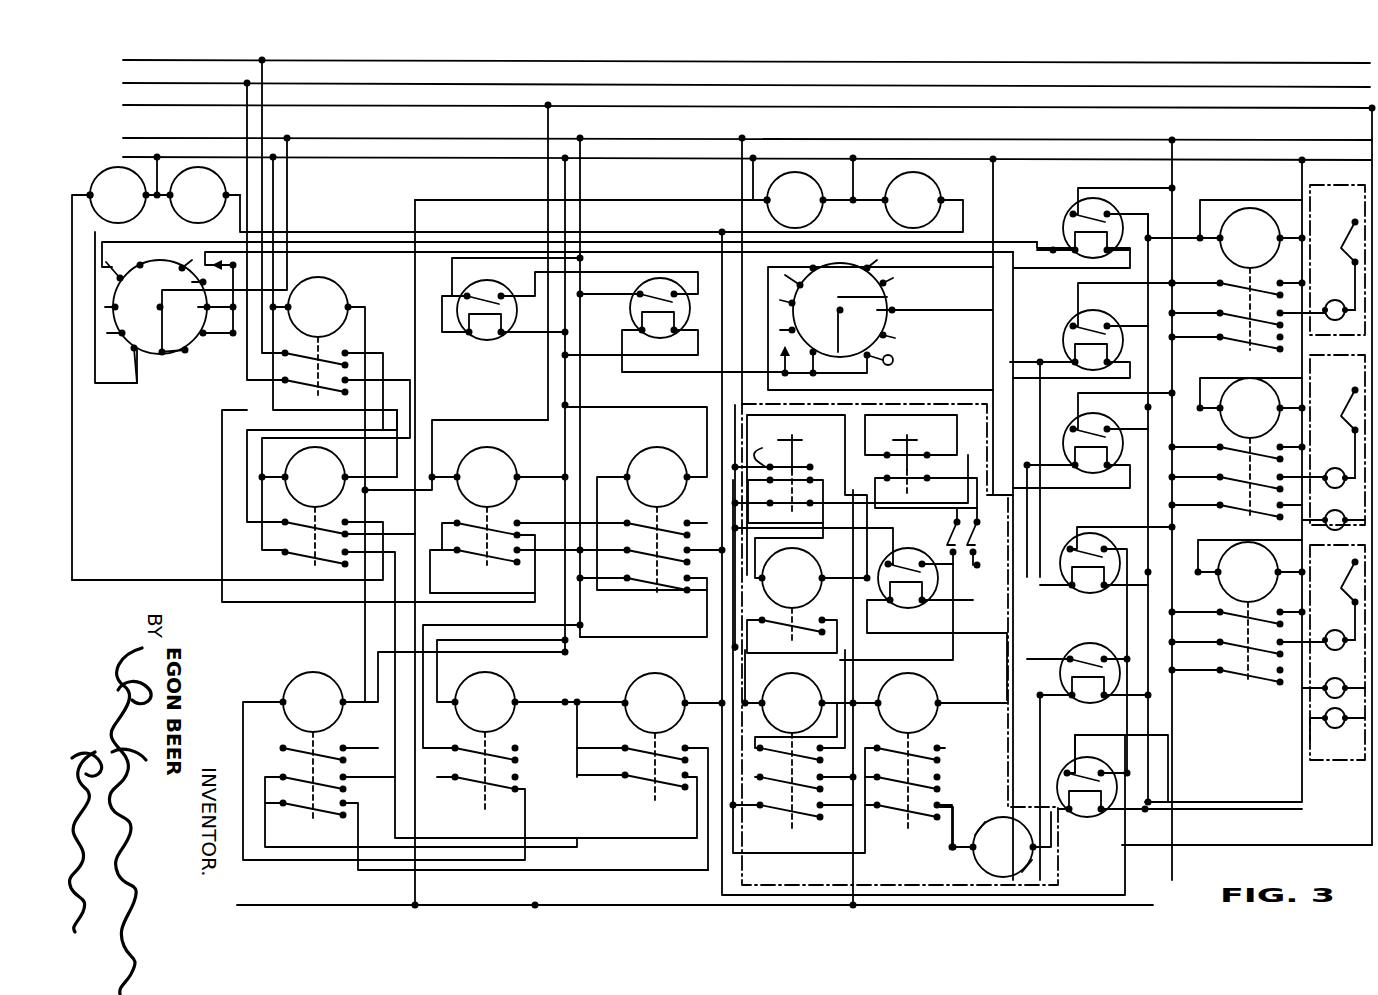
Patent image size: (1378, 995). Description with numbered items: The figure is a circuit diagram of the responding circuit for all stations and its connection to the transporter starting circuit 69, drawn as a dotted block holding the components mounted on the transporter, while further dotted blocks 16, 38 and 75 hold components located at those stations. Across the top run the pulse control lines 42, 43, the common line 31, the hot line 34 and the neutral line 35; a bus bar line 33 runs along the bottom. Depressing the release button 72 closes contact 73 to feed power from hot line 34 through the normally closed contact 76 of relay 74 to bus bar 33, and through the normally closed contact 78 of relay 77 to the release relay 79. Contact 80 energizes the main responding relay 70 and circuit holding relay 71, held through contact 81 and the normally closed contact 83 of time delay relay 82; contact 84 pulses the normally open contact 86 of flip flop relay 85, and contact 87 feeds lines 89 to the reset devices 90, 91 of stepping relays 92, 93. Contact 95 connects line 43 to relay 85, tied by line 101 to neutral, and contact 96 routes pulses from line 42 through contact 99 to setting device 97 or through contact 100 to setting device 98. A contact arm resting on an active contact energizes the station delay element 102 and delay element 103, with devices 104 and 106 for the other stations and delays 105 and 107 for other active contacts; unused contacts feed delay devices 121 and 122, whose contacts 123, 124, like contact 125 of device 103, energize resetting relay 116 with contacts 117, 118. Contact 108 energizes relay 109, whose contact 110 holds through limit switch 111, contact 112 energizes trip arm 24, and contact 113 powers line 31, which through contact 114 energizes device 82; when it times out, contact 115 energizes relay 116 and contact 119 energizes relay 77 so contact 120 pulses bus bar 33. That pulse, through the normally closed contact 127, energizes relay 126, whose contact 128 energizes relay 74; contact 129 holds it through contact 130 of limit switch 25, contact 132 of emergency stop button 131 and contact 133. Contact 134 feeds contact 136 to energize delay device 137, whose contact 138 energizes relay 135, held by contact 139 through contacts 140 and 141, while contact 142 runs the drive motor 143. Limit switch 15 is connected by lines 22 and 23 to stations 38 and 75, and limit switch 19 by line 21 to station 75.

The pulse control line 42 is at (168, 60).
The pulse control line 43 is at (126, 82).
The common line 31 is at (124, 105).
The hot line 34 is at (126, 138).
The neutral line 35 is at (124, 157).
The bus bar line 33 is at (282, 905).
The setting or actuating device 97 is at (227, 373).
The reset device 90 is at (193, 190).
The setting or actuating device 98 is at (825, 200).
The reset device 91 is at (913, 200).
The lines 89 is at (714, 232).
The stepping relay 92 is at (170, 352).
The stepping relay 93 is at (890, 322).
The main responding relay 70 is at (340, 295).
The contact 96 is at (310, 356).
The contact 95 is at (308, 394).
The line 101 is at (300, 410).
The flip flop relay 85 is at (328, 506).
The contact 100 is at (318, 537).
The contact 99 is at (345, 522).
The normally open contact 86 is at (312, 562).
The thermal time delay device 121 is at (487, 340).
The normally open contact 123 is at (501, 296).
The thermal time delay device 122 is at (632, 315).
The normally open contact 124 is at (680, 280).
The circuit holding relay 71 is at (500, 465).
The contact 81 is at (525, 515).
The contact 114 is at (487, 556).
The time delay relay 82 is at (648, 458).
The normally closed contact 83 is at (638, 520).
The contact 115 is at (644, 550).
The third contact 119 is at (648, 584).
The release button 72 is at (800, 440).
The contact 73 is at (765, 444).
The normally closed contact 127 is at (808, 478).
The normally closed contact 133 is at (851, 489).
The emergency stop button 131 is at (910, 436).
The normally closed contact 132 is at (918, 458).
The normally closed contact 140 is at (915, 483).
The normally closed contact 130 is at (956, 512).
The limit switch 25 is at (980, 535).
The normally closed contact 141 is at (985, 537).
The relay 126 is at (814, 581).
The contact 128 is at (792, 635).
The thermal time delay device 137 is at (905, 608).
The normally open contact 138 is at (915, 547).
The starting circuit 69 is at (1060, 865).
The thermal time delay element 102 is at (1065, 220).
The contact 108 is at (1107, 214).
The thermal time delay device 104 is at (1100, 318).
The thermal time delay device 106 is at (1100, 428).
The thermal time delay element 103 is at (1083, 582).
The normally open contact 125 is at (1103, 548).
The thermal time delay 105 is at (1085, 692).
The thermal time delay device 107 is at (1072, 778).
The transporter drive motor 143 is at (975, 862).
The relay 109 is at (1241, 427).
The contact 110 is at (1229, 282).
The contact 112 is at (1229, 310).
The third contact 113 is at (1229, 338).
The station 16 is at (1343, 186).
The station 38 is at (1312, 393).
The station 75 is at (1345, 762).
The limit switch 111 is at (1343, 245).
The trip arm 24 is at (1330, 302).
The line 22 is at (1322, 500).
The limit switch 15 is at (1325, 520).
The line 23 is at (1320, 670).
The line 21 is at (1325, 720).
The limit switch 19 is at (1315, 745).
The release relay 79 is at (314, 688).
The contact 80 is at (343, 748).
The contact 84 is at (343, 760).
The contact 87 is at (313, 812).
The relay 77 is at (500, 685).
The normally open contact 120 is at (495, 748).
The normally closed contact 78 is at (470, 785).
The relay 116 is at (642, 677).
The contact 117 is at (668, 748).
The contact 118 is at (645, 788).
The relay 74 is at (800, 690).
The contact 129 is at (800, 712).
The normally closed contact 76 is at (806, 788).
The contact 134 is at (782, 812).
The relay 135 is at (925, 690).
The contact 139 is at (920, 760).
The normally closed contact 136 is at (903, 772).
The third contact 142 is at (900, 818).